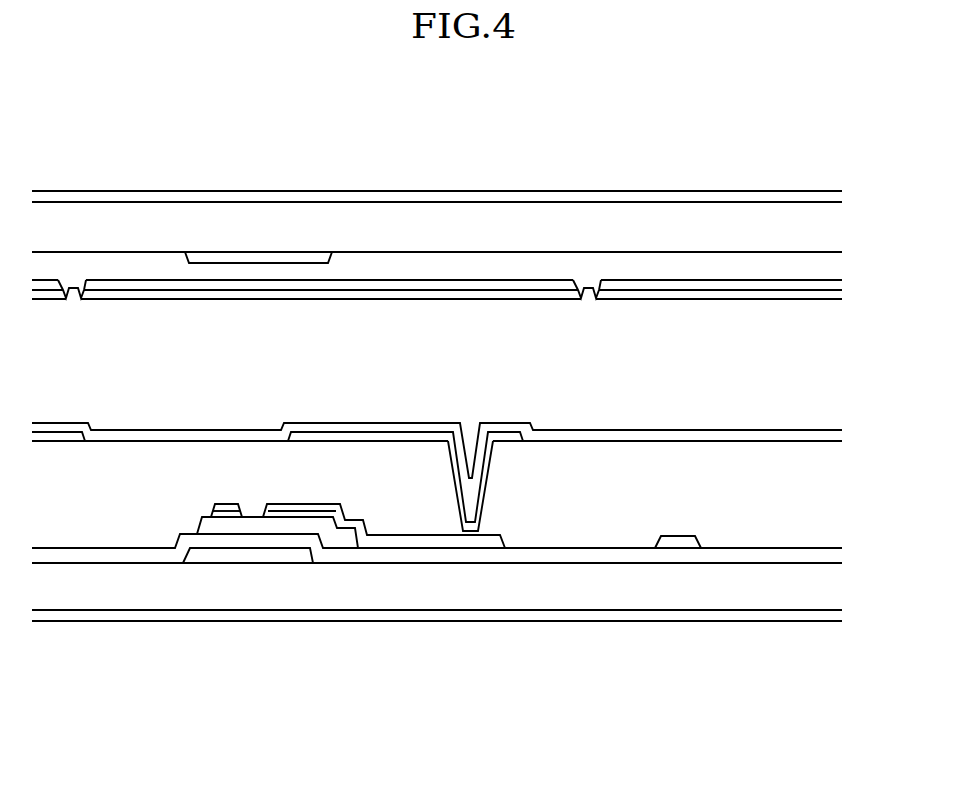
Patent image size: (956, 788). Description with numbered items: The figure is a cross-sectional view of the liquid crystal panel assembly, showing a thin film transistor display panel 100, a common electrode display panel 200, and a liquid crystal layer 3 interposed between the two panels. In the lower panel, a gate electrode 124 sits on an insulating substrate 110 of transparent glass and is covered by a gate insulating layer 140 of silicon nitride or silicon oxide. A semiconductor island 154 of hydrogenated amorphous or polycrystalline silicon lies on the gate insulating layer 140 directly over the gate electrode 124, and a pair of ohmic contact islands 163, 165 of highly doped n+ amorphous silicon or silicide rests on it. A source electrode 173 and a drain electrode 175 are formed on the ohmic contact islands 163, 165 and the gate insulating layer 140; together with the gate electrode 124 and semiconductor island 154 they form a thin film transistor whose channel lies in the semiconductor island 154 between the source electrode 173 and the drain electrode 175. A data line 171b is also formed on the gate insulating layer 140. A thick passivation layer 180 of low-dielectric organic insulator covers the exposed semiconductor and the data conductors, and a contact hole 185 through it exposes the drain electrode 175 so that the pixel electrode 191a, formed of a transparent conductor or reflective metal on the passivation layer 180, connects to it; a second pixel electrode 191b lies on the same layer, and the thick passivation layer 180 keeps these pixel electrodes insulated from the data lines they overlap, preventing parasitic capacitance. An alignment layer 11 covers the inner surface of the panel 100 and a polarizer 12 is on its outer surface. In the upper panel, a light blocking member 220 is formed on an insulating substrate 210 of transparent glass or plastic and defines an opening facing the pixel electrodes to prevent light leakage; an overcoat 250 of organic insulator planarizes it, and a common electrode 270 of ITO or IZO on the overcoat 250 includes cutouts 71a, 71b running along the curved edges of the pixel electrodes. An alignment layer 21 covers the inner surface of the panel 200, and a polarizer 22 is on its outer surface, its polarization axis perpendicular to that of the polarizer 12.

The polarizer 22 is at (830, 198).
The common electrode display panel 200 is at (851, 205).
The insulating substrate 210 is at (447, 226).
The light blocking member 220 is at (262, 253).
The overcoat 250 is at (555, 268).
The common electrode 270 is at (650, 286).
The alignment layer 21 is at (692, 297).
The cutout 71a is at (585, 294).
The cutout 71b is at (69, 299).
The liquid crystal layer 3 is at (851, 303).
The thin film transistor display panel 100 is at (851, 435).
The alignment layer 11 is at (692, 437).
The pixel electrode 191a is at (325, 437).
The pixel electrode 191b is at (60, 437).
The contact hole 185 is at (452, 455).
The passivation layer 180 is at (607, 512).
The gate insulating layer 140 is at (522, 553).
The gate electrode 124 is at (259, 556).
The semiconductor island 154 is at (200, 523).
The ohmic contact island 163 is at (226, 512).
The ohmic contact island 165 is at (288, 512).
The source electrode 173 is at (220, 505).
The drain electrode 175 is at (320, 506).
The data line 171b is at (683, 543).
The insulating substrate 110 is at (430, 596).
The polarizer 12 is at (830, 617).